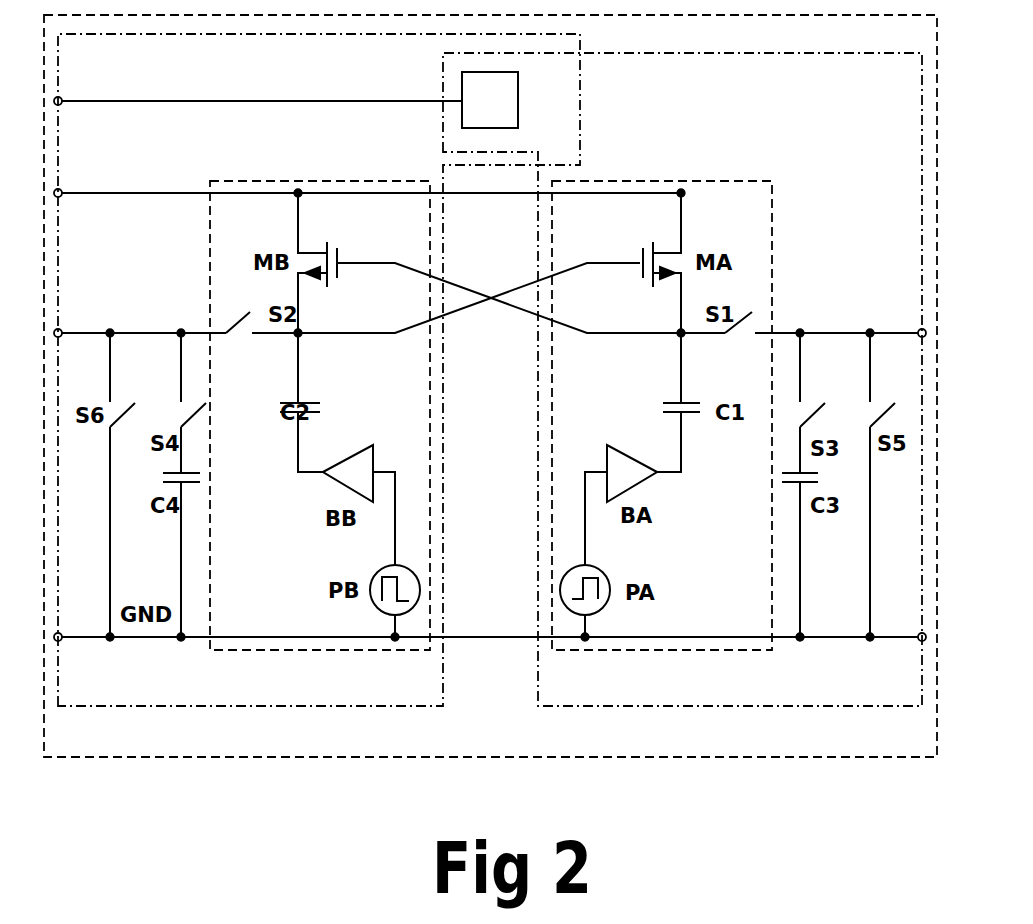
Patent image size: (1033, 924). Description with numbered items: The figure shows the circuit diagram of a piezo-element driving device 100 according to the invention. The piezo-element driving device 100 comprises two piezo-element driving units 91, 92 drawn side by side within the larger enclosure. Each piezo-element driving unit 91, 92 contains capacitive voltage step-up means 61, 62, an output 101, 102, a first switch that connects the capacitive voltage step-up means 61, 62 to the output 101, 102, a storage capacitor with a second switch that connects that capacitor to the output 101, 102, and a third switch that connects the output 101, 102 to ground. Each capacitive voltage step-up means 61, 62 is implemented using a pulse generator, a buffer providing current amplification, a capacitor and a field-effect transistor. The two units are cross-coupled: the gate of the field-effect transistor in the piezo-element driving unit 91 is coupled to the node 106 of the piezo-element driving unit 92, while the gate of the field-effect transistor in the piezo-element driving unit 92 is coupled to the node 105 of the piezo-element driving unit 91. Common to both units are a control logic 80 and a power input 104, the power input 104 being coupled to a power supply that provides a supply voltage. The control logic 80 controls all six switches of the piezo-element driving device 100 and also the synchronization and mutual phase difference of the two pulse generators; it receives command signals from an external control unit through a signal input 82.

The piezo-element driving device 100 is at (497, 757).
The piezo-element driving unit 92 is at (313, 706).
The piezo-element driving unit 91 is at (705, 706).
The control logic 80 is at (518, 90).
The signal input 82 is at (62, 99).
The power input 104 is at (62, 191).
The output 102 is at (62, 331).
The output 101 is at (918, 331).
The node 106 is at (302, 331).
The node 105 is at (677, 331).
The capacitive voltage step-up means 62 is at (307, 650).
The capacitive voltage step-up means 61 is at (673, 650).